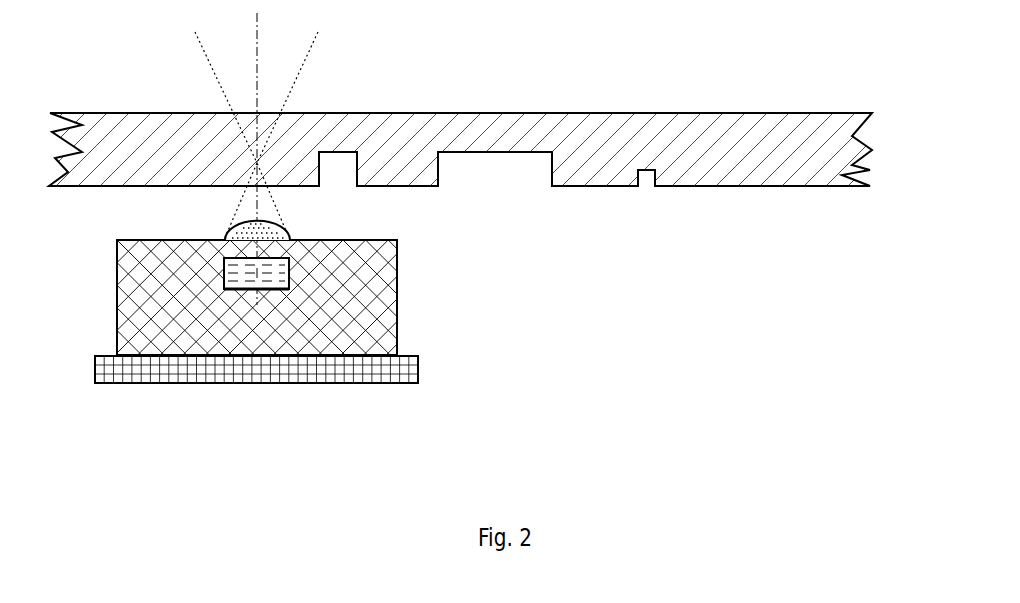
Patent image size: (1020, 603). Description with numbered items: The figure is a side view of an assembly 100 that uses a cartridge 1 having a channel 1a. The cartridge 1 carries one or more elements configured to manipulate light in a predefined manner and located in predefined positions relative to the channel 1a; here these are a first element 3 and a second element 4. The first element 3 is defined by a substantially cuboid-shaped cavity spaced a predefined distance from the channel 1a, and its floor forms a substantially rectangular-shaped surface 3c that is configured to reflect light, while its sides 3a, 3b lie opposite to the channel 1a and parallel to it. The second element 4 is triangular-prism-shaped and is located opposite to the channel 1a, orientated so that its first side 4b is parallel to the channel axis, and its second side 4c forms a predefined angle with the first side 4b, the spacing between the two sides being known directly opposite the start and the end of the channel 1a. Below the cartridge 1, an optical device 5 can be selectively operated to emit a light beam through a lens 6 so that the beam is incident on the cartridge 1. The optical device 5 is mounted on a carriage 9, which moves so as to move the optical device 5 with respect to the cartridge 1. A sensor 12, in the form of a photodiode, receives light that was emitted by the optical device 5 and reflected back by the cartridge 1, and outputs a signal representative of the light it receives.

The cartridge 1 is at (710, 132).
The channel 1a is at (648, 178).
The first element 3 is at (340, 168).
The side 3a is at (320, 168).
The side 3b is at (353, 168).
The substantially rectangular-shaped surface 3c is at (340, 152).
The second element 4 is at (488, 165).
The first side 4b is at (552, 170).
The second side 4c is at (440, 170).
The optical device 5 is at (398, 285).
The lens 6 is at (233, 233).
The carriage 9 is at (408, 355).
The sensor 12 is at (224, 273).
The assembly 100 is at (607, 319).